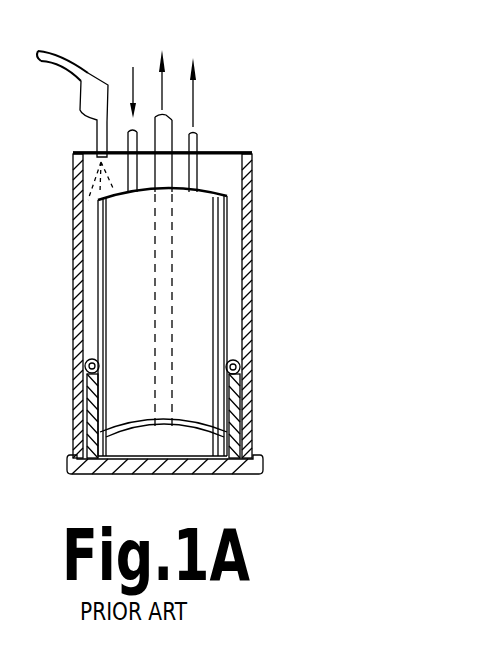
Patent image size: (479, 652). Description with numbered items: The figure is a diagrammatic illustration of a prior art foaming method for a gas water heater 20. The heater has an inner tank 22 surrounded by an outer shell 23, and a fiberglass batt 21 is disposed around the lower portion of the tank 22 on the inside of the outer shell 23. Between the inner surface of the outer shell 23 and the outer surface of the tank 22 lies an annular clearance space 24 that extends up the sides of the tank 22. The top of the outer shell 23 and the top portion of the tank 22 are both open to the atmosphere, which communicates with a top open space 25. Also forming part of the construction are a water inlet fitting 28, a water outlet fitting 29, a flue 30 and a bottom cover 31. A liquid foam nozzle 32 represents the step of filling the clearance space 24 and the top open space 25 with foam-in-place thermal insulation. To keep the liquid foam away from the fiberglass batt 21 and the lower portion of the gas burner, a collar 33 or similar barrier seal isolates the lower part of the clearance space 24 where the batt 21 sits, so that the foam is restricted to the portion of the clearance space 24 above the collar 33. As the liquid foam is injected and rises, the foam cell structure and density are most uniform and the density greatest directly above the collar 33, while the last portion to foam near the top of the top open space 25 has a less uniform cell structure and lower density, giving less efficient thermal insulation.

The gas water heater 20 is at (332, 140).
The fiberglass batt 21 is at (252, 419).
The tank 22 is at (215, 285).
The outer shell 23 is at (252, 222).
The clearance space 24 is at (90, 317).
The top open space 25 is at (230, 165).
The water inlet fitting 28 is at (128, 130).
The water outlet fitting 29 is at (199, 143).
The flue 30 is at (157, 116).
The bottom cover 31 is at (67, 466).
The liquid foam nozzle 32 is at (80, 101).
The collar 33 is at (242, 364).